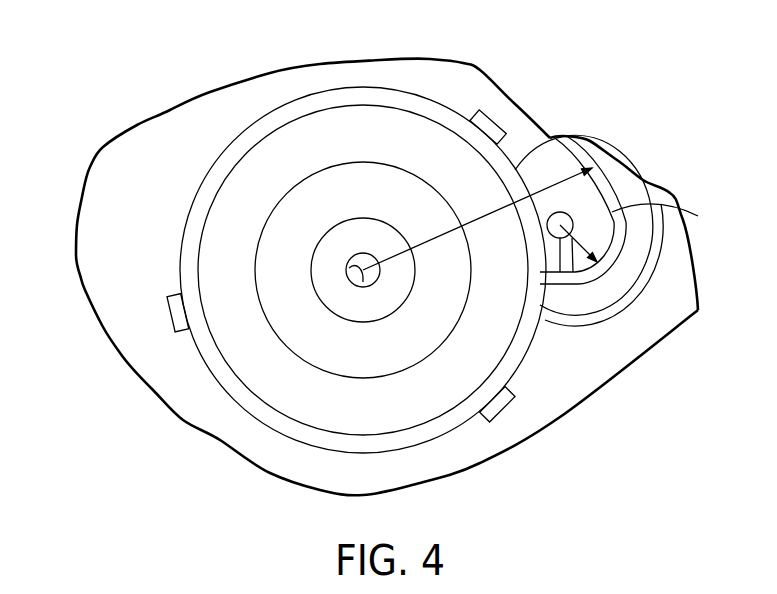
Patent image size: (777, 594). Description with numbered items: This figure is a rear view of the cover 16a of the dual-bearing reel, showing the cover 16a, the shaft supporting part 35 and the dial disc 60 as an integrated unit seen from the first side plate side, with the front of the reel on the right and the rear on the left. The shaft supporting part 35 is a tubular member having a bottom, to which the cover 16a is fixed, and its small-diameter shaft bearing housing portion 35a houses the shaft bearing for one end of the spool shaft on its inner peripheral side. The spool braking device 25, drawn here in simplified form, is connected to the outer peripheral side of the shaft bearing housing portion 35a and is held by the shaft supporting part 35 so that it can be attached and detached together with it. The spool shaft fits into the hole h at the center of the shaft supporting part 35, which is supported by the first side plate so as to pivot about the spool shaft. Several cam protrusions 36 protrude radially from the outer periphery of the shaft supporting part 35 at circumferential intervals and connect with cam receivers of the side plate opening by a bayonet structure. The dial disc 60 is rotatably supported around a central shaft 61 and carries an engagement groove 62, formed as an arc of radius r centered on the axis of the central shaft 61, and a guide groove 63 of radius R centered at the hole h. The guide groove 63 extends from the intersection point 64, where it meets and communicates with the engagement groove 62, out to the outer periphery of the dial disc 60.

The cover 16a is at (210, 92).
The shaft supporting part 35 is at (205, 176).
The shaft bearing housing portion 35a is at (347, 218).
The spool braking device 25 is at (282, 343).
The hole h is at (354, 278).
The cam protrusions 36 is at (490, 113).
The dial disc 60 is at (553, 137).
The central shaft 61 is at (550, 238).
The engagement groove 62 is at (573, 272).
The guide groove 63 is at (592, 145).
The intersection point 64 is at (698, 215).
The radius R is at (468, 215).
The radius r is at (583, 235).